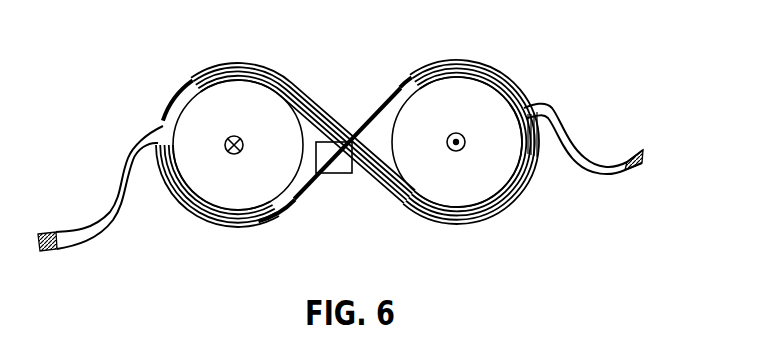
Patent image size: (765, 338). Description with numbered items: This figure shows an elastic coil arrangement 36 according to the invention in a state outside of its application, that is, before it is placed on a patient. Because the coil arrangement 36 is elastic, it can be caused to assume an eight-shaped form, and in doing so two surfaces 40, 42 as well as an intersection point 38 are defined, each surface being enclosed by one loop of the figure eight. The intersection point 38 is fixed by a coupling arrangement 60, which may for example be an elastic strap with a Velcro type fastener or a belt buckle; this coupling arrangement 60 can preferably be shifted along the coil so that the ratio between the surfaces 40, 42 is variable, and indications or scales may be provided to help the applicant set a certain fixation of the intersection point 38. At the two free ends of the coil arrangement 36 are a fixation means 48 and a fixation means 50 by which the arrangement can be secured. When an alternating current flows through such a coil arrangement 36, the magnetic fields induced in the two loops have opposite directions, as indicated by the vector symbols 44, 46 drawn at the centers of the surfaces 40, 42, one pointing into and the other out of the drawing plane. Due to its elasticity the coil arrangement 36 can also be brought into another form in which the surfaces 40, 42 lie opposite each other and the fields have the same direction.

The coil arrangement 36 is at (477, 217).
The intersection point 38 is at (333, 175).
The surface 40 is at (195, 102).
The surface 42 is at (483, 98).
The vector symbol 44 is at (234, 136).
The vector symbol 46 is at (452, 131).
The fixation means 48 is at (80, 231).
The fixation means 50 is at (607, 170).
The coupling arrangement 60 is at (345, 139).